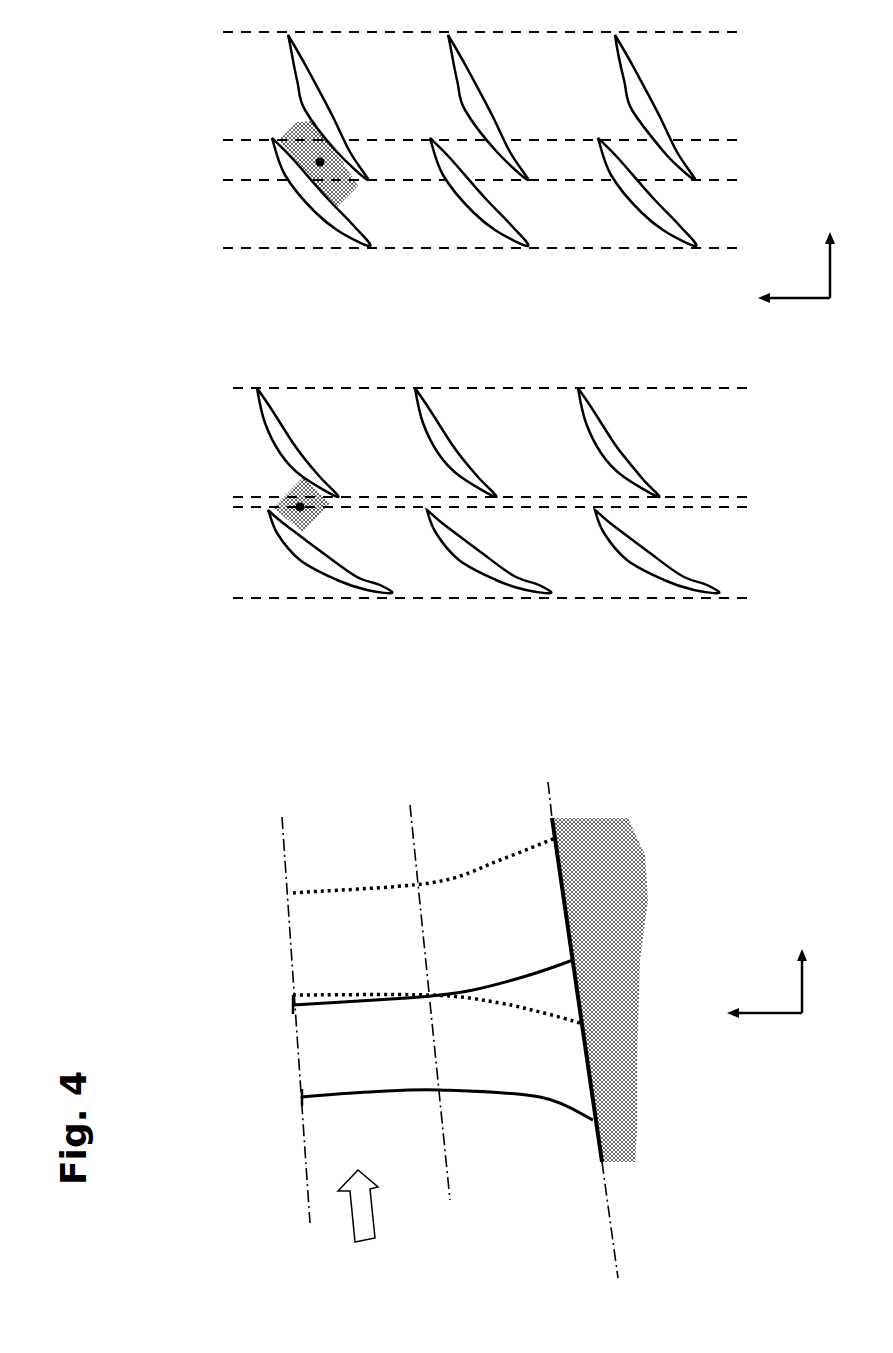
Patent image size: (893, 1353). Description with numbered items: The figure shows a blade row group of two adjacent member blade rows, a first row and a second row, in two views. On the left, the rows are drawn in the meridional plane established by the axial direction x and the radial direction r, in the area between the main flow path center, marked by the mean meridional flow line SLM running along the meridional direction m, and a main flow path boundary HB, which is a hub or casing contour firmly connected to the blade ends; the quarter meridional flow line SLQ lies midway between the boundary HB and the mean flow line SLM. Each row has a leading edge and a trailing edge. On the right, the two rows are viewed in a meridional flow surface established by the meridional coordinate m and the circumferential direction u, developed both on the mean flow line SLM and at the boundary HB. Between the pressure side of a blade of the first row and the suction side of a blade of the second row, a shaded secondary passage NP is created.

The secondary passage NP is at (300, 507).
The mean meridional flow line SLM is at (231, 856).
The quarter meridional flow line SLQ is at (420, 960).
The main flow path boundary HB is at (400, 740).
The meridional direction m is at (833, 247).
The circumferential direction u is at (791, 308).
The radial direction r is at (763, 1023).
The axial direction x is at (802, 964).